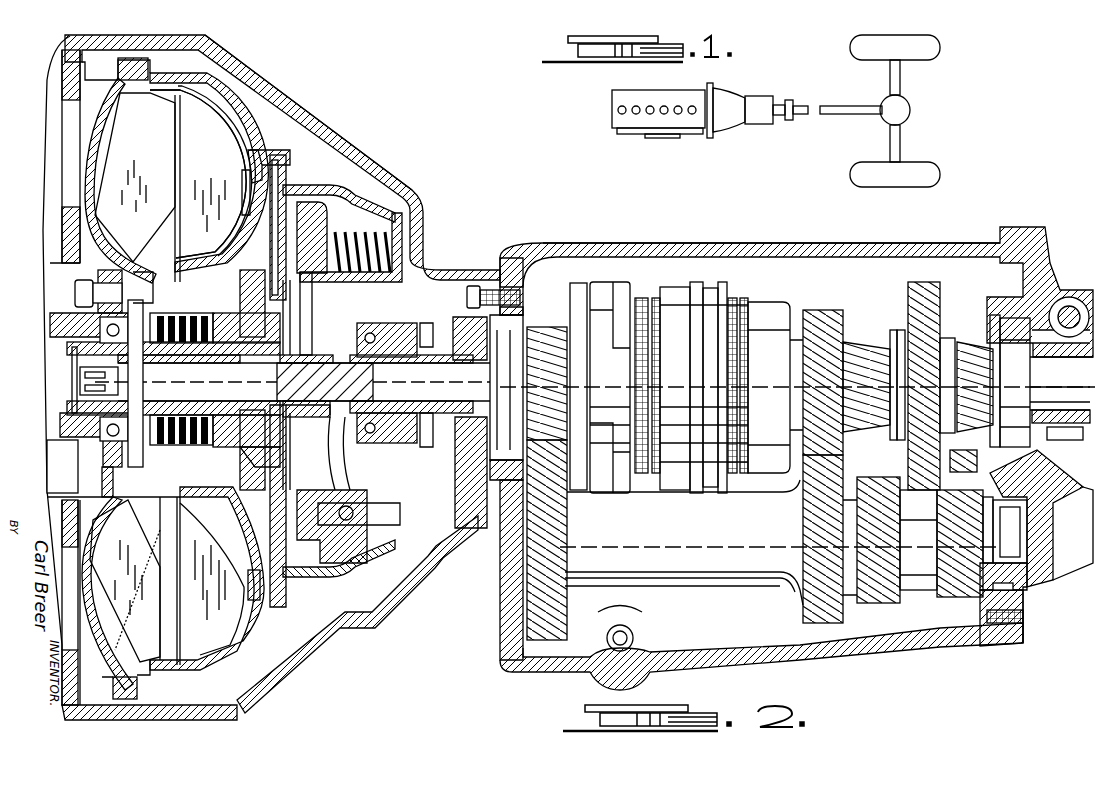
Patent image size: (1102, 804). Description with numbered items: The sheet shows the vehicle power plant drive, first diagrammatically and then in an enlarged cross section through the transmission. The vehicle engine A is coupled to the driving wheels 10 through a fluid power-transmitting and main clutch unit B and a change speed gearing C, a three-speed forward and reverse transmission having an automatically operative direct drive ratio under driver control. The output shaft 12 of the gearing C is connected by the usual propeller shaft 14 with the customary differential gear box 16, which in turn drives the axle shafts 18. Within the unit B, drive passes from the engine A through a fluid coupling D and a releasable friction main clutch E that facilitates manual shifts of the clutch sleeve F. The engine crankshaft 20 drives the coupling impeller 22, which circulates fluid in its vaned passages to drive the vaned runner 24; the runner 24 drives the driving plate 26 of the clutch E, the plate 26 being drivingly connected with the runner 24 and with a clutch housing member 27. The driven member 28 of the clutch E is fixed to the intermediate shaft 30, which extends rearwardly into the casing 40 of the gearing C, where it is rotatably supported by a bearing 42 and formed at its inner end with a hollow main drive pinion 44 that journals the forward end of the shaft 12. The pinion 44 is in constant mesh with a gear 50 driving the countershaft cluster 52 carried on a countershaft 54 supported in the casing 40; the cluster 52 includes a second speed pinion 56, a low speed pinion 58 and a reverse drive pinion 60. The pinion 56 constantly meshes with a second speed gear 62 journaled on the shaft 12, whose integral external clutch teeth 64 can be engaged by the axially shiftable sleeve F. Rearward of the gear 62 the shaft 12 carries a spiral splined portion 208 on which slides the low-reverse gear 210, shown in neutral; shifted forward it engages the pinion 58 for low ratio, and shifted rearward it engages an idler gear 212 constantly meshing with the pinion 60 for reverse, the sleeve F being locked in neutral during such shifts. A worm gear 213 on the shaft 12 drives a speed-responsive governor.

In FIG. 1, the driving wheels 10 is at (935, 48).
In FIG. 1, the output shaft 12 is at (788, 102).
In FIG. 2, the output shaft 12 is at (1072, 384).
In FIG. 1, the propeller shaft 14 is at (862, 104).
In FIG. 1, the differential gear box 16 is at (910, 113).
In FIG. 1, the axle shafts 18 is at (898, 80).
In FIG. 1, the vehicle engine A is at (638, 90).
In FIG. 1, the fluid power-transmitting and main clutch unit B is at (727, 90).
In FIG. 2, the fluid power-transmitting and main clutch unit B is at (288, 103).
In FIG. 1, the change speed gearing C is at (752, 96).
In FIG. 2, the change speed gearing C is at (806, 228).
In FIG. 2, the fluid coupling D is at (225, 78).
In FIG. 2, the main clutch E is at (302, 218).
In FIG. 2, the clutch sleeve F is at (677, 293).
In FIG. 2, the engine crankshaft 20 is at (60, 320).
In FIG. 2, the coupling impeller 22 is at (150, 165).
In FIG. 2, the vaned runner 24 is at (226, 162).
In FIG. 2, the driving plate 26 is at (284, 607).
In FIG. 2, the clutch housing member 27 is at (402, 223).
In FIG. 2, the driven member 28 is at (303, 216).
In FIG. 2, the intermediate shaft 30 is at (410, 388).
In FIG. 2, the casing 40 is at (573, 243).
In FIG. 2, the bearing 42 is at (510, 326).
In FIG. 2, the main drive pinion 44 is at (560, 300).
In FIG. 2, the gear 50 is at (567, 598).
In FIG. 2, the countershaft cluster 52 is at (693, 586).
In FIG. 2, the countershaft 54 is at (483, 562).
In FIG. 2, the second speed pinion 56 is at (800, 613).
In FIG. 2, the low speed pinion 58 is at (860, 600).
In FIG. 2, the reverse drive pinion 60 is at (953, 597).
In FIG. 2, the second speed gear 62 is at (822, 313).
In FIG. 2, the external clutch teeth 64 is at (747, 300).
In FIG. 2, the spiral splined portion 208 is at (892, 312).
In FIG. 2, the low-reverse gear 210 is at (940, 288).
In FIG. 2, the idler gear 212 is at (1022, 468).
In FIG. 2, the bearing bore 213 is at (1085, 270).